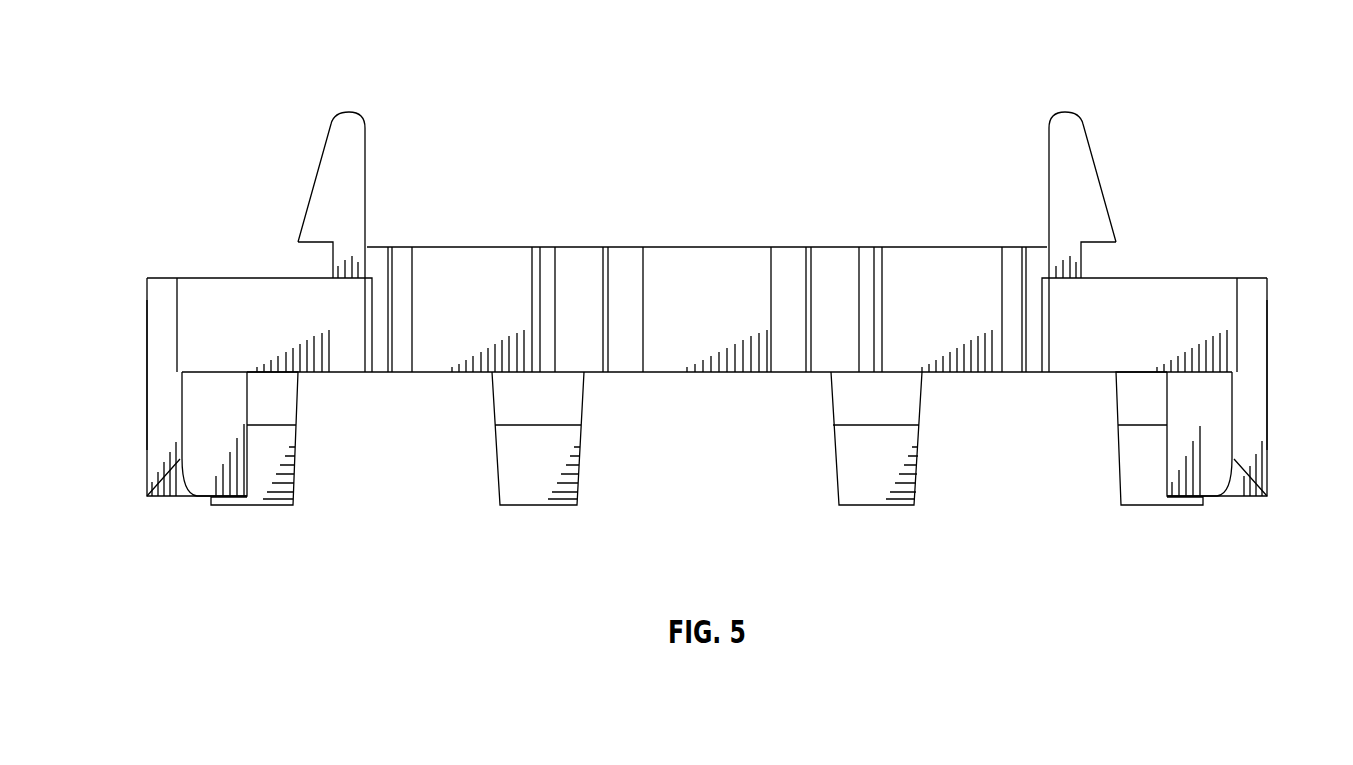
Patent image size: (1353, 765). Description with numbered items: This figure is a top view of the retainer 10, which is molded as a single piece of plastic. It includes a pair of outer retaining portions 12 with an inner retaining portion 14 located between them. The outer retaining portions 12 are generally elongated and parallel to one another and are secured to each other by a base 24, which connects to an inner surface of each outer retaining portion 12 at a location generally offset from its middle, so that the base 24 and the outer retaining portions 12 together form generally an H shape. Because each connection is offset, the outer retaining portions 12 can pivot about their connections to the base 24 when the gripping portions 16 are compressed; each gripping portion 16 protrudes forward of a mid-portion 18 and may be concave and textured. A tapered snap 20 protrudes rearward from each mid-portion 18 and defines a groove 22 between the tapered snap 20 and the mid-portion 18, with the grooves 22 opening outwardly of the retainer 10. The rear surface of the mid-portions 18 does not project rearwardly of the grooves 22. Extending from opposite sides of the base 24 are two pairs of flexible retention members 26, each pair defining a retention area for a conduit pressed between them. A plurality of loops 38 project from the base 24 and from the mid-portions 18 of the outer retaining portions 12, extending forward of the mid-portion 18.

The retainer 10 is at (1199, 64).
The outer retaining portion 12 is at (202, 278).
The inner retaining portion 14 is at (392, 160).
The gripping portion 16 is at (147, 450).
The mid-portion 18 is at (147, 300).
The tapered snap 20 is at (347, 111).
The groove 22 is at (333, 276).
The base 24 is at (710, 247).
The flexible retention member 26 is at (461, 247).
The loop 38 is at (252, 506).